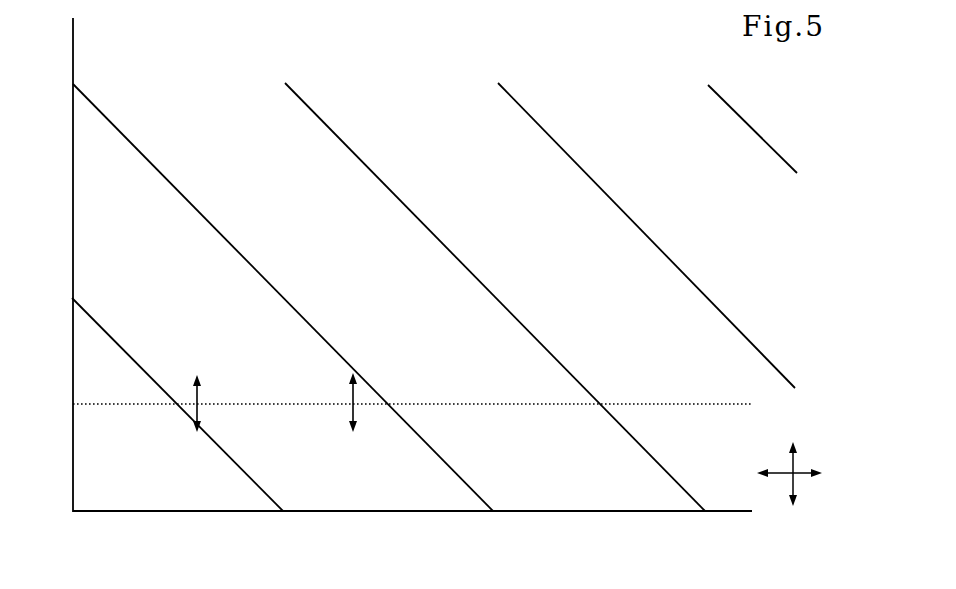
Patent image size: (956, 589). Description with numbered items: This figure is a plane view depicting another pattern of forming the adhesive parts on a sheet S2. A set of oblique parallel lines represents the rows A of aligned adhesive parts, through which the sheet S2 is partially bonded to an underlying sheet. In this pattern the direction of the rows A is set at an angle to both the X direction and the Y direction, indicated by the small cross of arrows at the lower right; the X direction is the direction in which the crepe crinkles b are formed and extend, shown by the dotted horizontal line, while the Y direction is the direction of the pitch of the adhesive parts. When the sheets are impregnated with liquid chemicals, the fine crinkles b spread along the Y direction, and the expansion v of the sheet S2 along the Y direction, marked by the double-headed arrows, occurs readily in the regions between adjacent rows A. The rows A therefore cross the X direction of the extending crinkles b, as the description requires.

The row of aligned adhesive parts A is at (263, 273).
The expansion along the Y direction v is at (203, 395).
The crinkles b is at (317, 406).
The sheet S2 is at (605, 501).
The X direction X is at (800, 475).
The Y direction Y is at (793, 460).